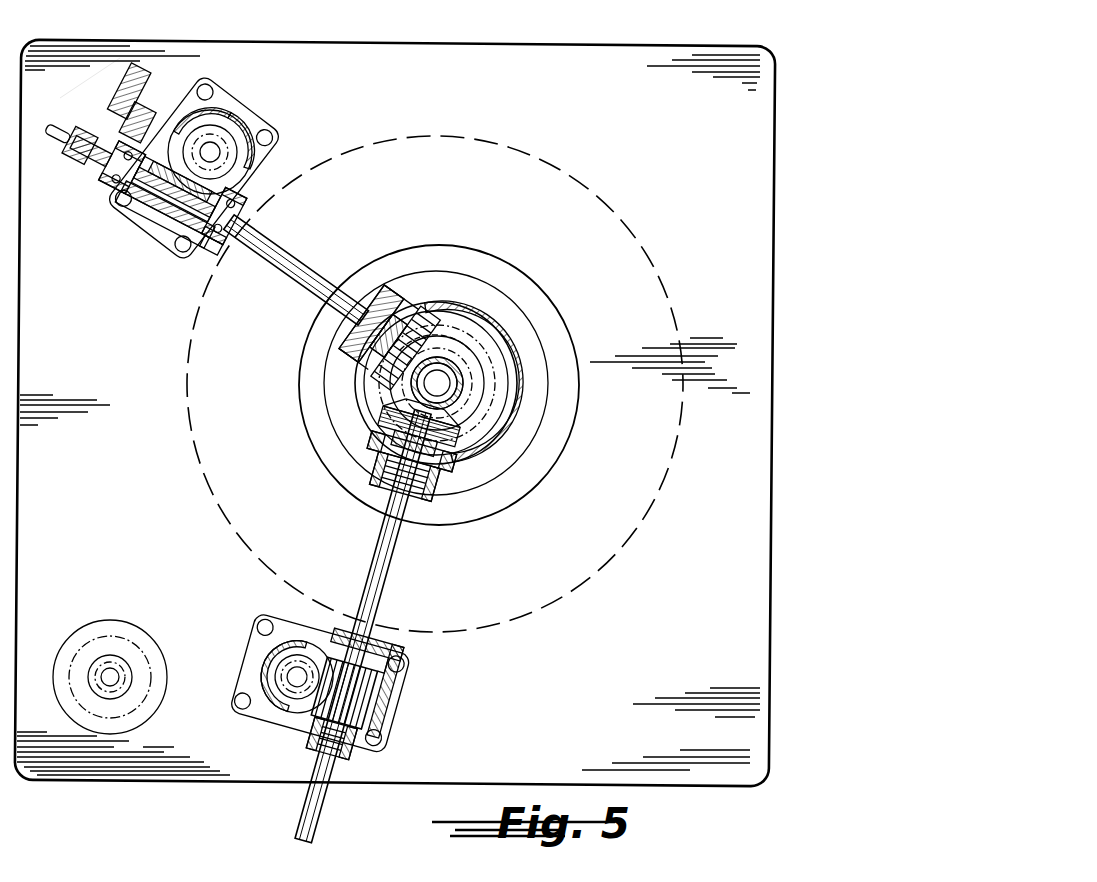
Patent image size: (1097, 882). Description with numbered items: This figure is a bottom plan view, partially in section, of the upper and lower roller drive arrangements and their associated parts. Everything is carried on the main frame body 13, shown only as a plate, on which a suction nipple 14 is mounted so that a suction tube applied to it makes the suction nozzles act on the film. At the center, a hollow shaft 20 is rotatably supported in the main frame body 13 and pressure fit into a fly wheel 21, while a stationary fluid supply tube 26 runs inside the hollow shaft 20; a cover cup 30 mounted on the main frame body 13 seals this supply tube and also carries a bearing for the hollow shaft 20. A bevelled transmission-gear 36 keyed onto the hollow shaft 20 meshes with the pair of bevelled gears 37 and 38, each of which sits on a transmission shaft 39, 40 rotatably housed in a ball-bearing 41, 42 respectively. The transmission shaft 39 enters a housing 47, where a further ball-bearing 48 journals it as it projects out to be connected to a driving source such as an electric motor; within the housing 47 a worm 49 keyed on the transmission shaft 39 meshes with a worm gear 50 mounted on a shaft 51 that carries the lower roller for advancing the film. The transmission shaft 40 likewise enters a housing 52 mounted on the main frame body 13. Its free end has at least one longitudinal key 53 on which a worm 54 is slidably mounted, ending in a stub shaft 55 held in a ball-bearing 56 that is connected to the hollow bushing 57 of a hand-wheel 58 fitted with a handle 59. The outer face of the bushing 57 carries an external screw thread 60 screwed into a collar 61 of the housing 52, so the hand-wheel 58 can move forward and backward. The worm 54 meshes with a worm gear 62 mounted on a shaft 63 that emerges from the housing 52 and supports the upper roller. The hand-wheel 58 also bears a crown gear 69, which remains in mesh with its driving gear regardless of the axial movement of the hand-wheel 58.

The main frame body 13 is at (398, 70).
The suction nipple 14 is at (148, 716).
The hollow shaft 20 is at (470, 418).
The fly wheel 21 is at (188, 410).
The stationary fluid supply tube 26 is at (450, 381).
The cover cup 30 is at (462, 376).
The bevelled transmission-gear 36 is at (448, 413).
The bevelled gear 37 is at (522, 472).
The bevelled gear 38 is at (500, 293).
The transmission shaft 39 is at (380, 574).
The transmission shaft 40 is at (263, 254).
The ball-bearing 41 is at (428, 505).
The ball-bearing 42 is at (332, 372).
The housing 47 is at (398, 648).
The ball-bearing 48 is at (345, 757).
The worm 49 is at (355, 706).
The worm gear 50 is at (272, 720).
The shaft 51 is at (292, 680).
The housing 52 is at (253, 117).
The longitudinal key 53 is at (248, 182).
The worm 54 is at (168, 228).
The stub shaft 55 is at (110, 182).
The ball-bearing 56 is at (160, 127).
The hollow bushing 57 is at (100, 172).
The hand-wheel 58 is at (118, 93).
The handle 59 is at (62, 130).
The external screw thread 60 is at (98, 178).
The collar 61 is at (118, 220).
The worm gear 62 is at (223, 104).
The shaft 63 is at (218, 153).
The crown gear 69 is at (148, 56).